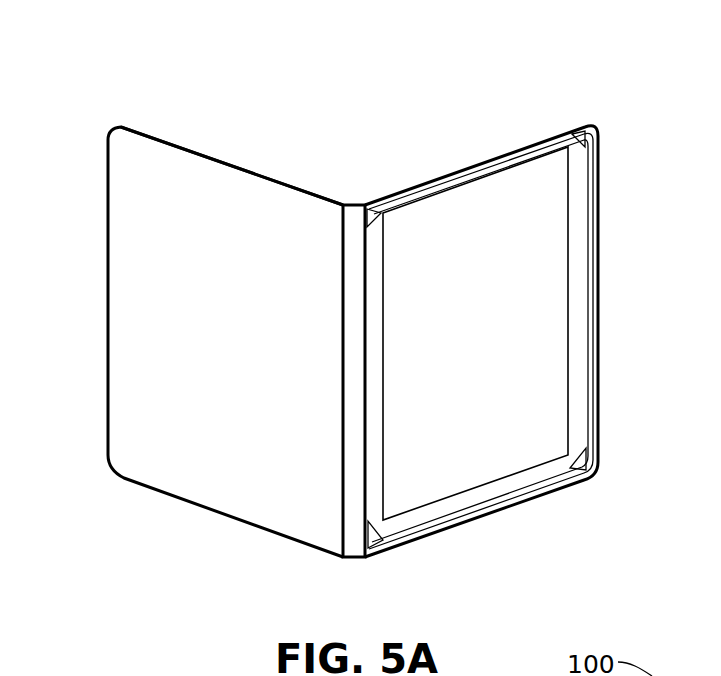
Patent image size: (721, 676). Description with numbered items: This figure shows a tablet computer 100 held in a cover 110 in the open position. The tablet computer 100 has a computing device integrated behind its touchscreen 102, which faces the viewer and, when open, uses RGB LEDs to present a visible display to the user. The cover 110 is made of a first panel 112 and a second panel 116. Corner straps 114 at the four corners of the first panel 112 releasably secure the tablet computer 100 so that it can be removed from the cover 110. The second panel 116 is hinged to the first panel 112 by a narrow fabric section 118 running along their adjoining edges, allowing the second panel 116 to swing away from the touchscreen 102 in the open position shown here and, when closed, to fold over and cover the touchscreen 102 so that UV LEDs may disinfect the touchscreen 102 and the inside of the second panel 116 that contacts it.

The tablet computer 100 is at (489, 74).
The touchscreen 102 is at (473, 205).
The cover 110 is at (236, 164).
The first panel 112 is at (598, 303).
The corner straps 114 is at (370, 205).
The second panel 116 is at (108, 296).
The narrow fabric section 118 is at (353, 508).